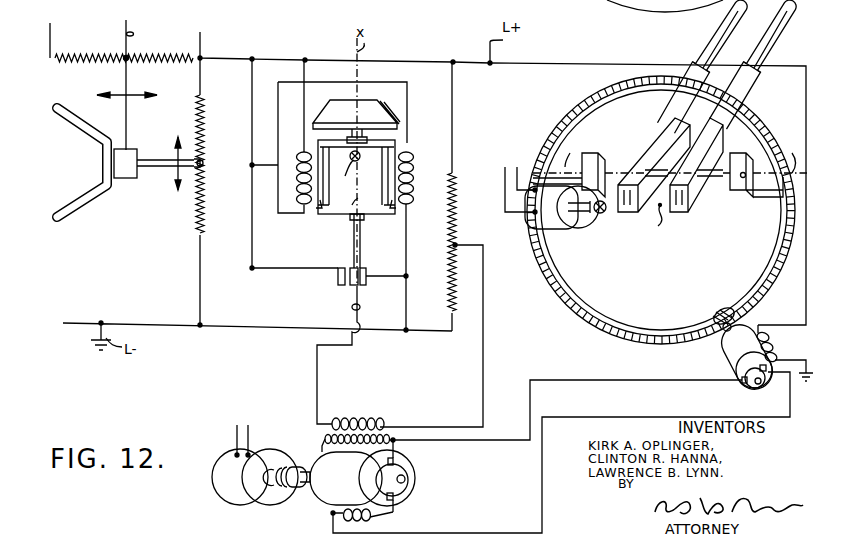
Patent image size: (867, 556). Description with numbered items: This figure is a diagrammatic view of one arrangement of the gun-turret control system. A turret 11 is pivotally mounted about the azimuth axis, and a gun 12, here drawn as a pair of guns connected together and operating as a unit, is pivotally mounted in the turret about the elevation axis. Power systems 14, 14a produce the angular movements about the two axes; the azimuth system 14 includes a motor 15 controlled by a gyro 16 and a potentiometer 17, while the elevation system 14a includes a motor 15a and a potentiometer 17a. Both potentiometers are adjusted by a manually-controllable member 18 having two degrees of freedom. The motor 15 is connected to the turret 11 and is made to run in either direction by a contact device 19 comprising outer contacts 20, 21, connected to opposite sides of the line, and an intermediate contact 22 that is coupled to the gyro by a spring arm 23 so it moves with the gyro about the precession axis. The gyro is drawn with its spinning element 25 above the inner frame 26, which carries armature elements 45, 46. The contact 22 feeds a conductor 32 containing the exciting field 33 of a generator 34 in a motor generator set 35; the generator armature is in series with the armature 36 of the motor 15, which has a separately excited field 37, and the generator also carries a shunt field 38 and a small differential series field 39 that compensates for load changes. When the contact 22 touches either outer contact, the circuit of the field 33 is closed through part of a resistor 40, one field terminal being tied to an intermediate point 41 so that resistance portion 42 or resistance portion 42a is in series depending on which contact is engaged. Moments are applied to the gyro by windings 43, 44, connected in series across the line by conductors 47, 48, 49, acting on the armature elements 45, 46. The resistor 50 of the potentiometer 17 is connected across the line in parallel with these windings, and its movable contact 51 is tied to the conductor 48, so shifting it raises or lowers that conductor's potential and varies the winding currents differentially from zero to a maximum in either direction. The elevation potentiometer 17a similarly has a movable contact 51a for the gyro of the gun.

The turret 11 is at (568, 122).
The gun 12 is at (722, 110).
The power system 14 is at (185, 203).
The power system 14a is at (178, 85).
The motor 15 is at (730, 352).
The motor 15a is at (553, 218).
The gyro 16 is at (340, 239).
The potentiometer 17 is at (234, 152).
The potentiometer 17a is at (100, 41).
The manually-controllable member 18 is at (82, 203).
The contact device 19 is at (343, 311).
The outer contact 20 is at (338, 279).
The outer contact 21 is at (367, 283).
The intermediate contact 22 is at (361, 271).
The spring arm 23 is at (353, 252).
The disc 25 is at (383, 112).
The inner frame 26 is at (383, 137).
The conductor 32 is at (317, 390).
The exciting field 33 is at (357, 419).
The generator 34 is at (351, 476).
The motor generator set 35 is at (307, 520).
The armature 36 is at (745, 366).
The separately excited field 37 is at (777, 343).
The shunt field 38 is at (381, 437).
The differential series field 39 is at (371, 518).
The resistor 40 is at (439, 232).
The intermediate point 41 is at (456, 245).
The resistance portion 42 is at (471, 280).
The resistance portion 42a is at (454, 215).
The winding 43 is at (298, 190).
The winding 44 is at (413, 172).
The armature element 45 is at (316, 208).
The armature element 46 is at (391, 207).
The conductor 47 is at (305, 138).
The conductor 48 is at (278, 156).
The conductor 49 is at (407, 275).
The resistor 50 is at (205, 136).
The movable contact 51 is at (204, 167).
The movable contact 51a is at (128, 55).